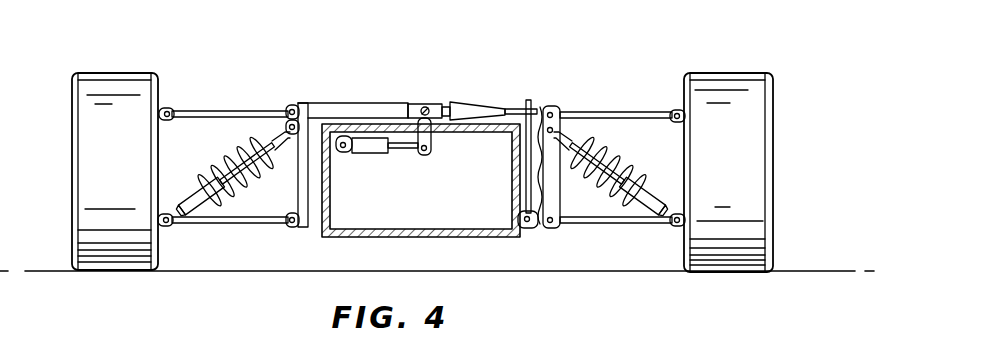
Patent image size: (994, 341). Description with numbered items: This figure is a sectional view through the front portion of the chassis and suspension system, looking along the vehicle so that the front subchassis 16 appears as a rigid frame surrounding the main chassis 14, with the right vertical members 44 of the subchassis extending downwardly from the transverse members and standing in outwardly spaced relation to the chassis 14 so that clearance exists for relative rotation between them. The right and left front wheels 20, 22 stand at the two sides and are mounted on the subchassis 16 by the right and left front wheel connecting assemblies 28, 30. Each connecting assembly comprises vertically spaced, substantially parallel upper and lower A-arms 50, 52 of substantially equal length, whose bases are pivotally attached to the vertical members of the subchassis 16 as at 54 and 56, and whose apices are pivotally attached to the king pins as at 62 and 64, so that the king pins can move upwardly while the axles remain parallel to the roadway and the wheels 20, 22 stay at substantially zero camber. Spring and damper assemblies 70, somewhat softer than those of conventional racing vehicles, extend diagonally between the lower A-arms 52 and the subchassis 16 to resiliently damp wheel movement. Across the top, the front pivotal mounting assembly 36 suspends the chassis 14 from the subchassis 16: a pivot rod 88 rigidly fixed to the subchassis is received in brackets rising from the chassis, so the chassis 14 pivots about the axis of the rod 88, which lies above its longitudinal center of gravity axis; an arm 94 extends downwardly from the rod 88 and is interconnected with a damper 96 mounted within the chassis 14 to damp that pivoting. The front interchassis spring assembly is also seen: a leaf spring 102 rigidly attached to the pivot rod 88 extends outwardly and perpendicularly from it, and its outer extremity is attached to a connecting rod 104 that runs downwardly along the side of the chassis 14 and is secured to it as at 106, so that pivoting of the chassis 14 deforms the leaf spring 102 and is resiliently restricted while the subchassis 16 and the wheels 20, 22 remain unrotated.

The chassis 14 is at (499, 110).
The front subchassis 16 is at (450, 139).
The right front wheel 20 is at (118, 82).
The left front wheel 22 is at (745, 102).
The right front wheel connecting assembly 28 is at (422, 164).
The left front wheel connecting assembly 30 is at (605, 155).
The front pivotal mounting assembly 36 is at (498, 71).
The right vertical members 44 is at (308, 195).
The upper A-arms 50 is at (262, 112).
The lower A-arms 52 is at (237, 224).
The upper A-arm pivotal attachment 54 is at (295, 107).
The lower A-arm pivotal attachment 56 is at (552, 229).
The upper A-arm king pin pivot 62 is at (170, 110).
The lower A-arm king pin pivot 64 is at (170, 224).
The spring and damper assemblies 70 is at (250, 172).
The pivot rod 88 is at (426, 104).
The arm 94 is at (428, 140).
The damper 96 is at (370, 150).
The leaf spring 102 is at (462, 110).
The connecting rod 104 is at (531, 103).
The connecting rod attachment 106 is at (525, 230).